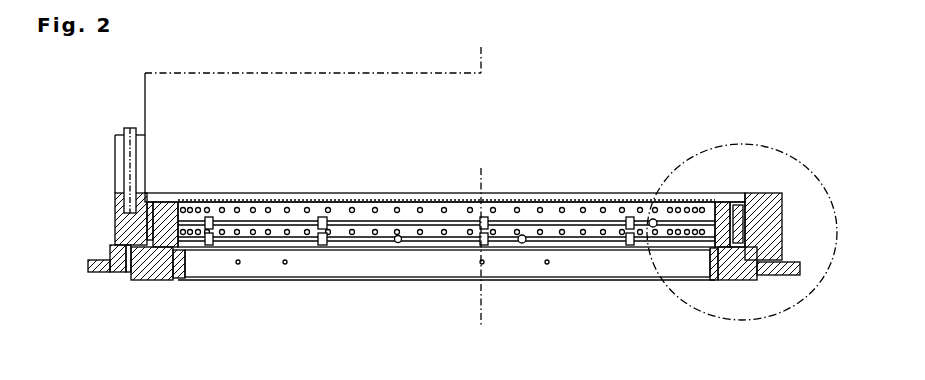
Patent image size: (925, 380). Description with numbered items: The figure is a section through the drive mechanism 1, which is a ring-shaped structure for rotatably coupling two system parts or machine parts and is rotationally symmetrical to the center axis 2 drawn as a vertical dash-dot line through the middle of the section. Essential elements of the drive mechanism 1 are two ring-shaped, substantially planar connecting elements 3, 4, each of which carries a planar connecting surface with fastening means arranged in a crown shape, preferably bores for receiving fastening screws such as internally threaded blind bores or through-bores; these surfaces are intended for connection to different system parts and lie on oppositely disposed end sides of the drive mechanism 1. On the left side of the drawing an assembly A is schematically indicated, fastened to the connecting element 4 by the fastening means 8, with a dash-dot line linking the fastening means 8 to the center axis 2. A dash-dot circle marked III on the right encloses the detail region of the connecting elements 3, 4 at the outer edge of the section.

The drive mechanism 1 is at (621, 128).
The center axis 2 is at (316, 186).
The connecting element 3 is at (152, 285).
The connecting element 4 is at (122, 230).
The fastening means 8 is at (130, 116).
The assembly A is at (289, 139).
The detail region III is at (757, 158).